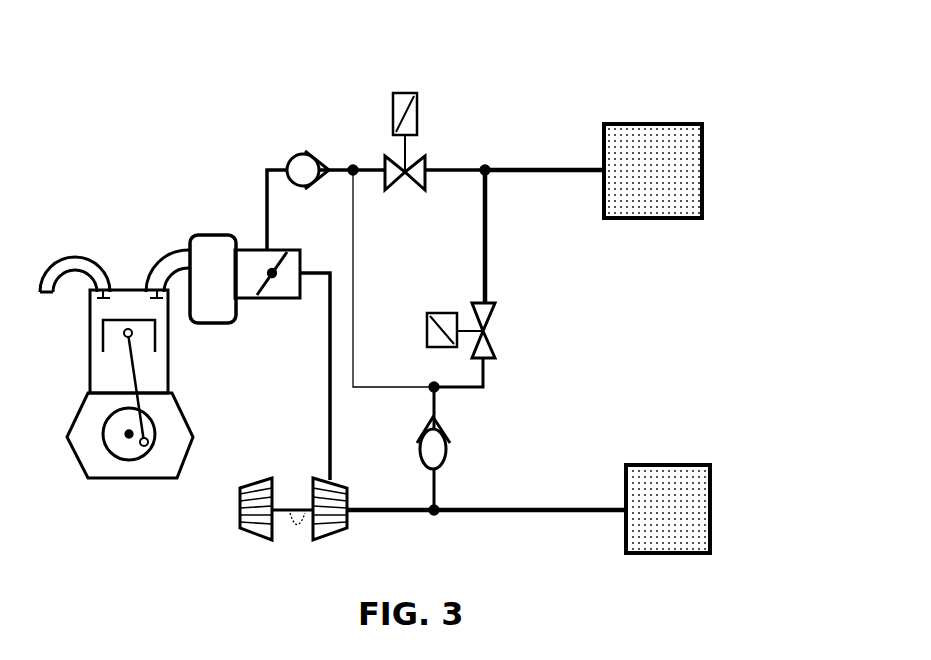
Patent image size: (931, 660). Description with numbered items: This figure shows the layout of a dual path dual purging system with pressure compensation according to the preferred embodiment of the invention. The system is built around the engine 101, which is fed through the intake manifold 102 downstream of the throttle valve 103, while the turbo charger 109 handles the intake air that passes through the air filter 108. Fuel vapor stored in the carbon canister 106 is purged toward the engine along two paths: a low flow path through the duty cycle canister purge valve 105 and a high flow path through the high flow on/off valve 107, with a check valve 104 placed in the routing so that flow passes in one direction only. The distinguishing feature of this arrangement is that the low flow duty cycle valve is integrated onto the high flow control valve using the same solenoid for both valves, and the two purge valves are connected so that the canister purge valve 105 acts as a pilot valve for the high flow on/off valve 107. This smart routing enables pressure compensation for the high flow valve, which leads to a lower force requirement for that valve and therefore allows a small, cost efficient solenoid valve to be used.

The engine 101 is at (132, 290).
The intake manifold 102 is at (212, 235).
The throttle valve 103 is at (248, 250).
The check valve 104 is at (302, 154).
The duty cycle canister purge valve 105 is at (417, 107).
The carbon canister 106 is at (702, 167).
The high flow on/off valve 107 is at (483, 331).
The air filter 108 is at (710, 512).
The turbo charger 109 is at (238, 510).